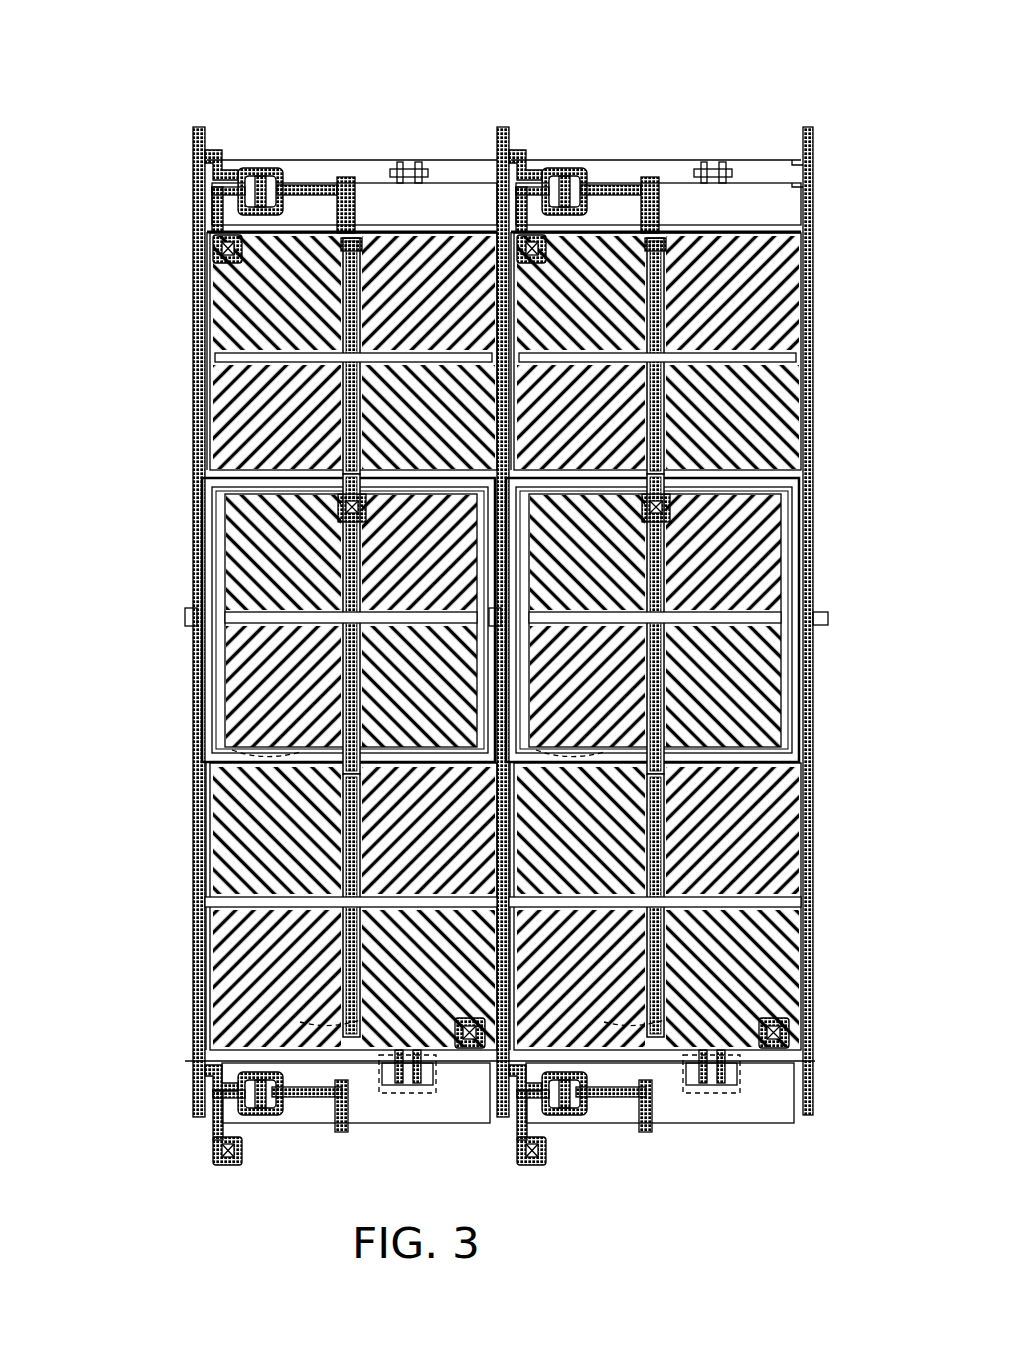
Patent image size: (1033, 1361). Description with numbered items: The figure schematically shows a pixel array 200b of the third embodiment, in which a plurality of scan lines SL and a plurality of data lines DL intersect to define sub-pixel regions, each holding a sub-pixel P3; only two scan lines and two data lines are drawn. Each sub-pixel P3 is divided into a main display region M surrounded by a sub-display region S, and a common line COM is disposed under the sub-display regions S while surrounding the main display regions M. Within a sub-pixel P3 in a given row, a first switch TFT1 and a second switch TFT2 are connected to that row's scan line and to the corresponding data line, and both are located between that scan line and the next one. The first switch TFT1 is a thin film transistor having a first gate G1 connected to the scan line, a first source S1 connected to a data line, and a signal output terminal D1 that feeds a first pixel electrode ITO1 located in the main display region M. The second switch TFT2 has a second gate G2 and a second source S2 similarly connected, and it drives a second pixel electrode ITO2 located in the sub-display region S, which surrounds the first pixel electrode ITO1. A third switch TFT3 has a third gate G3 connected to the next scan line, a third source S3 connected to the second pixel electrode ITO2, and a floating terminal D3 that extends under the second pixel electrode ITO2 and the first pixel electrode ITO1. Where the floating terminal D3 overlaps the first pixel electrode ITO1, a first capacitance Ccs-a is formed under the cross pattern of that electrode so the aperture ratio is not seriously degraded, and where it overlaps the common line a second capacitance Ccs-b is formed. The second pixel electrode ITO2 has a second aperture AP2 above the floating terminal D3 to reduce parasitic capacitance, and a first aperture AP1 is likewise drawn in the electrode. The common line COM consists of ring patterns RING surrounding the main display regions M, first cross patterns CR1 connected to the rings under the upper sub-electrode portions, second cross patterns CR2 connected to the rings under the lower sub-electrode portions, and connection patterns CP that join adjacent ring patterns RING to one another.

The data lines DL is at (485, 56).
The sub-pixel P3 is at (641, 118).
The scan lines SL is at (58, 1105).
The first switch TFT1 is at (298, 168).
The second switch TFT2 is at (243, 162).
The third switch TFT3 is at (420, 1098).
The first source S1 is at (262, 170).
The first gate G1 is at (290, 180).
The signal output terminal D1 is at (356, 236).
The second source S2 is at (218, 180).
The second gate G2 is at (234, 208).
The third source S3 is at (448, 1050).
The third gate G3 is at (392, 1090).
The floating terminal D3 is at (366, 1050).
The first aperture AP1 is at (344, 310).
The second aperture AP2 is at (344, 940).
The first pixel electrode ITO1 is at (226, 650).
The second pixel electrode ITO2 is at (214, 803).
The common line COM is at (113, 443).
The first cross pattern CR1 is at (214, 442).
The second cross pattern CR2 is at (205, 900).
The ring pattern RING is at (222, 508).
The connection pattern CP is at (200, 618).
The first capacitance Ccs-a is at (262, 754).
The second capacitance Ccs-b is at (340, 1022).
The sub-display region S is at (818, 235).
The main display region M is at (818, 488).
The pixel array 200b is at (778, 1194).